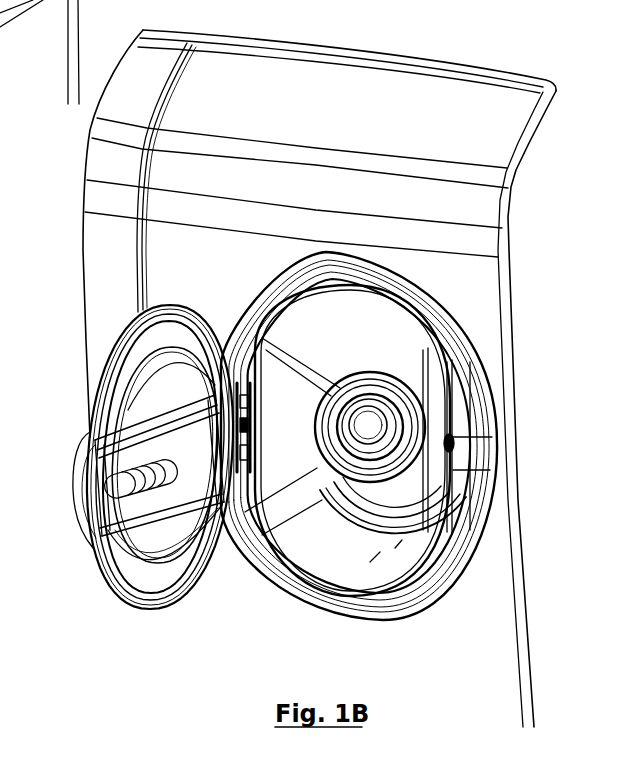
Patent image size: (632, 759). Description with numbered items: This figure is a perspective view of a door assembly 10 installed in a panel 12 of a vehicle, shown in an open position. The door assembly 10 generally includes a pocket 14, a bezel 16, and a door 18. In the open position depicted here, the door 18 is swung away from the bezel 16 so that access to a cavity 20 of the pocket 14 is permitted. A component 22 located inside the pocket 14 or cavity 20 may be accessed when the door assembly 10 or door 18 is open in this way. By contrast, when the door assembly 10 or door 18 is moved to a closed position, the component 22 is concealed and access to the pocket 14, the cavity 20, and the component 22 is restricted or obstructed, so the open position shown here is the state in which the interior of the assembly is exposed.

The door assembly 10 is at (207, 305).
The panel 12 is at (376, 90).
The pocket 14 is at (353, 350).
The bezel 16 is at (461, 326).
The door 18 is at (91, 559).
The cavity 20 is at (328, 538).
The component 22 is at (394, 392).